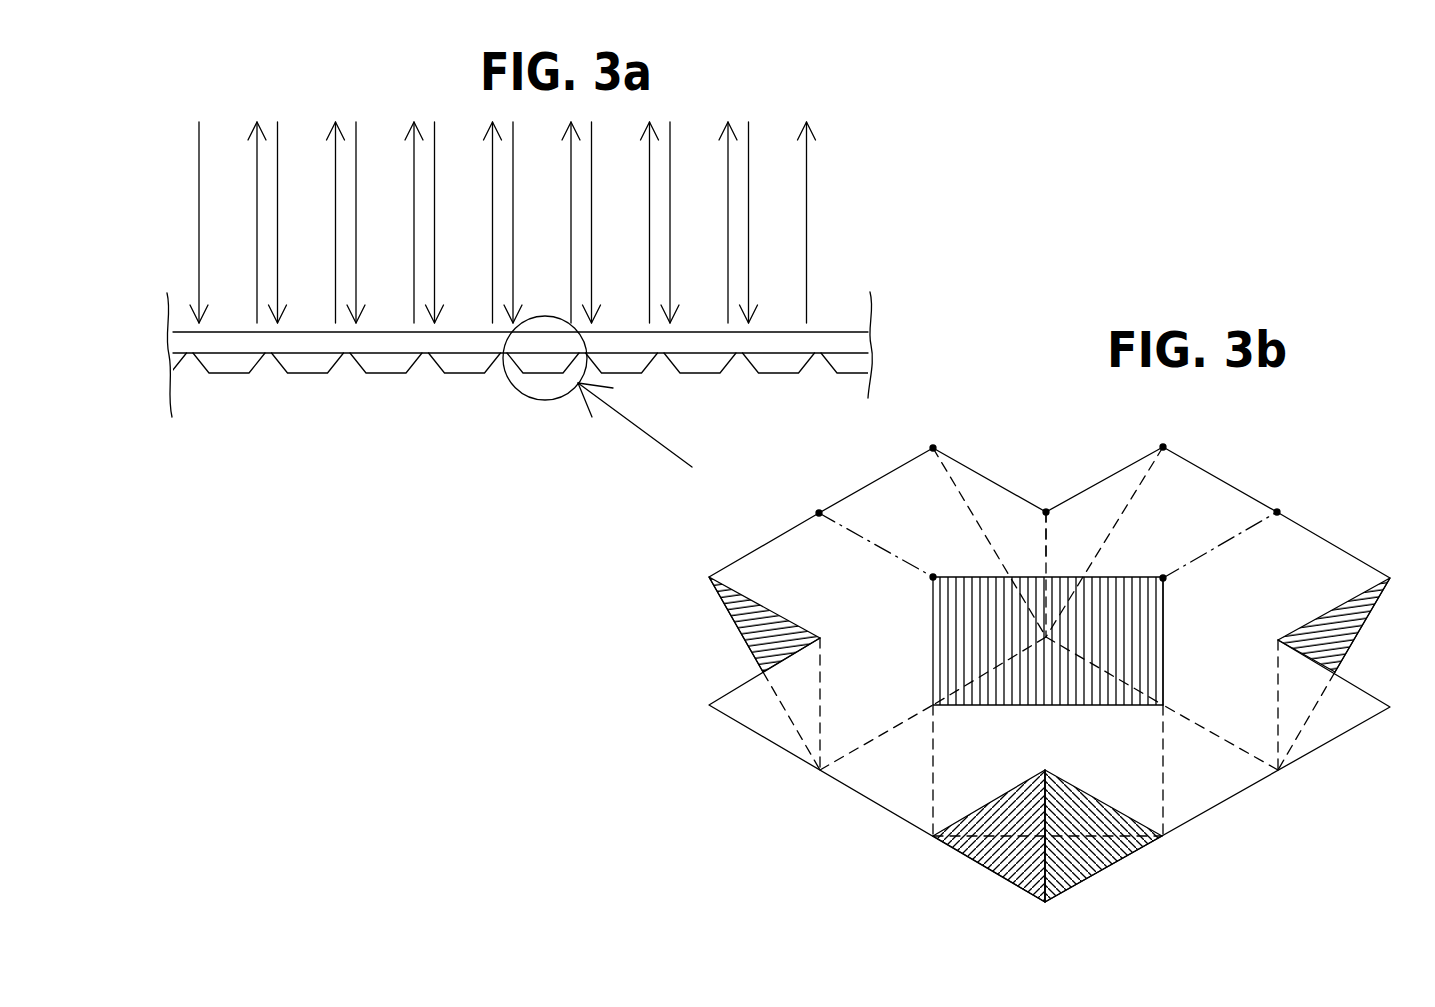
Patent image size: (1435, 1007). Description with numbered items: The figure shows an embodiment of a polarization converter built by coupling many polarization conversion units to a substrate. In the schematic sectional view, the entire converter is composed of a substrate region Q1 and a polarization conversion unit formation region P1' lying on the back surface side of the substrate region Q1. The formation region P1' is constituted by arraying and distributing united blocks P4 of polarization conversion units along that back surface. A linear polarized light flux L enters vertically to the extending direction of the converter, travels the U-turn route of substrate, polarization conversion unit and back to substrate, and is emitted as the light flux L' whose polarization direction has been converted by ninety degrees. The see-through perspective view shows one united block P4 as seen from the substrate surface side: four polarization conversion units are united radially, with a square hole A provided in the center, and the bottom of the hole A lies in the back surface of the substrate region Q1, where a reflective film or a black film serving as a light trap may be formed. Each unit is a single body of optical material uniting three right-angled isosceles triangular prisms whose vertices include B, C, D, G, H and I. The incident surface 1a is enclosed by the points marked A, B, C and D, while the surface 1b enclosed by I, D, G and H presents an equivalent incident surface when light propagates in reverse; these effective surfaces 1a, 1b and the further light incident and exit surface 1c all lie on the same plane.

In FIG. 3a, the linear polarized light flux L is at (490, 222).
In FIG. 3a, the converted light flux L' is at (516, 222).
In FIG. 3a, the substrate region Q1 is at (873, 333).
In FIG. 3a, the polarization conversion unit formation region P1' is at (542, 363).
In FIG. 3b, the united block P4 is at (1298, 437).
In FIG. 3b, the incident surface 1a is at (904, 501).
In FIG. 3b, the equivalent incident surface 1b is at (1189, 494).
In FIG. 3b, the light incident and exit surface 1c is at (1018, 519).
In FIG. 3b, the square hole A is at (1352, 537).
In FIG. 3b, the prism vertex B is at (806, 505).
In FIG. 3b, the prism vertex C is at (933, 576).
In FIG. 3b, the prism vertex D is at (1046, 511).
In FIG. 3b, the prism vertex G is at (1163, 577).
In FIG. 3b, the prism vertex H is at (1293, 500).
In FIG. 3b, the prism vertex I is at (1168, 429).